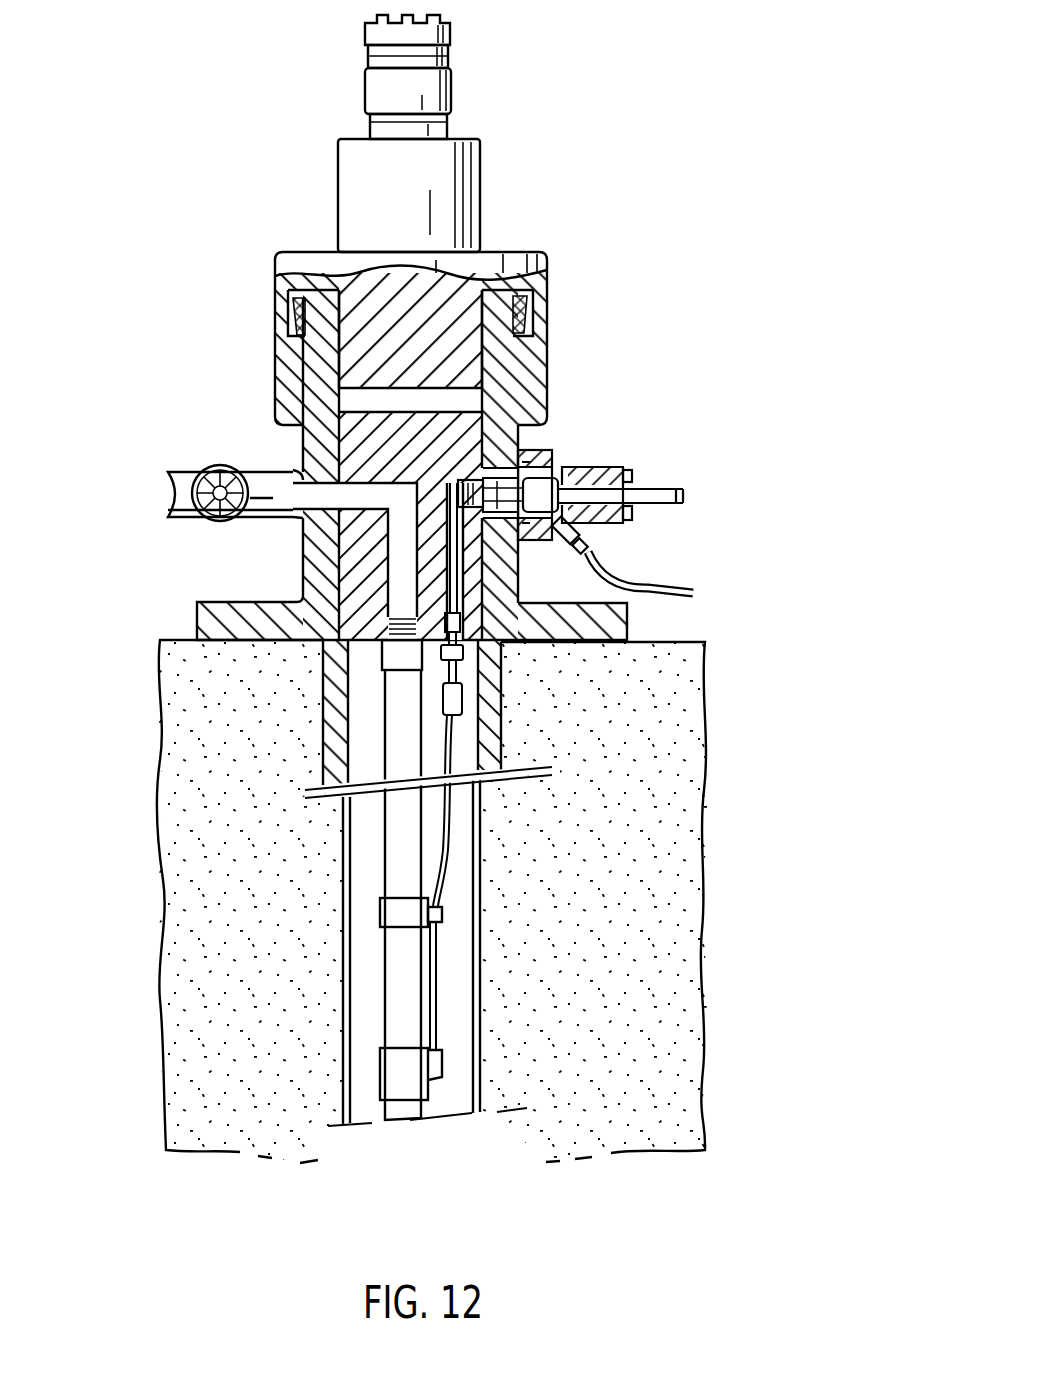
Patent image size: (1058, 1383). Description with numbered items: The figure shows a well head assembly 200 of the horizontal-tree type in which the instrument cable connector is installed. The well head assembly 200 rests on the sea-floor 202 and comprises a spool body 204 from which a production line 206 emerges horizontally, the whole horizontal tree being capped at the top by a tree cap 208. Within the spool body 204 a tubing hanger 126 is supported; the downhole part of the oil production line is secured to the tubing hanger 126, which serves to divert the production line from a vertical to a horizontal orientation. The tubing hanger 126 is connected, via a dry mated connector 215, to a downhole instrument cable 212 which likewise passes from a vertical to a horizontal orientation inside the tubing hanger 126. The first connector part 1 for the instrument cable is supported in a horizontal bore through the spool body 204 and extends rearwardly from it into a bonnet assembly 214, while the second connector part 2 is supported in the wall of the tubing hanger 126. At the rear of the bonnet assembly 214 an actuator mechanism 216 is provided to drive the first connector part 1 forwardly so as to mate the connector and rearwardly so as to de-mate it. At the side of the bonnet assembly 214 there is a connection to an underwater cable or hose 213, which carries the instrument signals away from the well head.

The well head assembly 200 is at (585, 292).
The sea-floor 202 is at (661, 744).
The spool body 204 is at (317, 548).
The production line 206 is at (298, 468).
The tree cap 208 is at (452, 213).
The tubing hanger 126 is at (337, 492).
The second connector part 2 is at (519, 460).
The first connector part 1 is at (504, 541).
The actuator mechanism 216 is at (670, 495).
The bonnet assembly 214 is at (617, 531).
The underwater cable or hose 213 is at (650, 587).
The dry mated connector 215 is at (452, 667).
The downhole instrument cable 212 is at (448, 852).